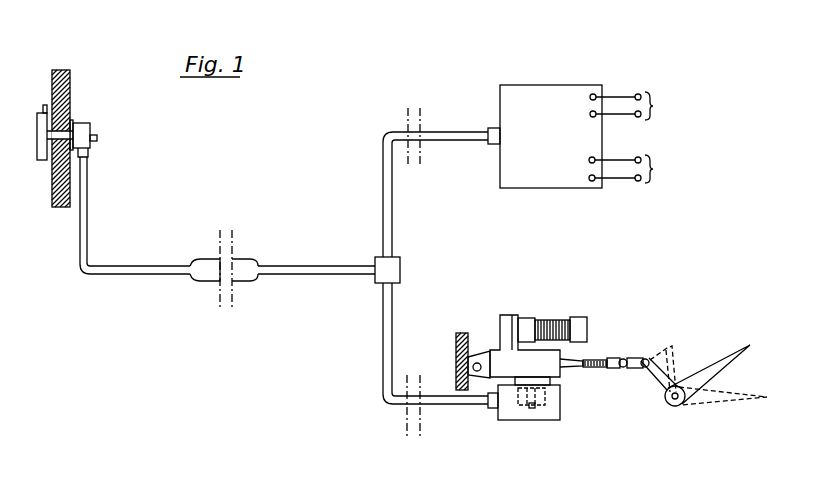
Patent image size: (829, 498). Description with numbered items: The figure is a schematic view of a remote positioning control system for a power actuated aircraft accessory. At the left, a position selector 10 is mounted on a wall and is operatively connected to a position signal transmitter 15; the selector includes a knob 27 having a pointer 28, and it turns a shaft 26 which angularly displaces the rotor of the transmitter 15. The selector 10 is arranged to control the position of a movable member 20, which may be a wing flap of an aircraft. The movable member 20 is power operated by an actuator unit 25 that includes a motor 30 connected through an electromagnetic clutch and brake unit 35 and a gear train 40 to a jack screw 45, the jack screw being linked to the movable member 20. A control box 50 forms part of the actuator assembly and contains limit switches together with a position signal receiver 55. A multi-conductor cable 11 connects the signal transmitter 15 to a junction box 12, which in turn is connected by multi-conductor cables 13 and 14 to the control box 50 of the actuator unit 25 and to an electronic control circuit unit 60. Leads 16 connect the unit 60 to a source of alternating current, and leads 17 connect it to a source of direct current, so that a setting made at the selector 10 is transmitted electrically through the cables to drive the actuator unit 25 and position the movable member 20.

The position selector 10 is at (39, 161).
The multi-conductor cable 11 is at (87, 259).
The junction box 12 is at (401, 268).
The multi-conductor cable 13 is at (393, 306).
The multi-conductor cable 14 is at (393, 202).
The position signal transmitter 15 is at (82, 122).
The leads 16 is at (617, 118).
The leads 17 is at (608, 163).
The movable member 20 is at (707, 368).
The actuator unit 25 is at (611, 376).
The shaft 26 is at (98, 138).
The knob 27 is at (37, 119).
The pointer 28 is at (45, 105).
The motor 30 is at (556, 319).
The electromagnetic clutch and brake unit 35 is at (523, 318).
The gear train 40 is at (500, 333).
The jack screw 45 is at (579, 366).
The control box 50 is at (500, 412).
The position signal receiver 55 is at (533, 407).
The electronic control circuit unit 60 is at (540, 76).